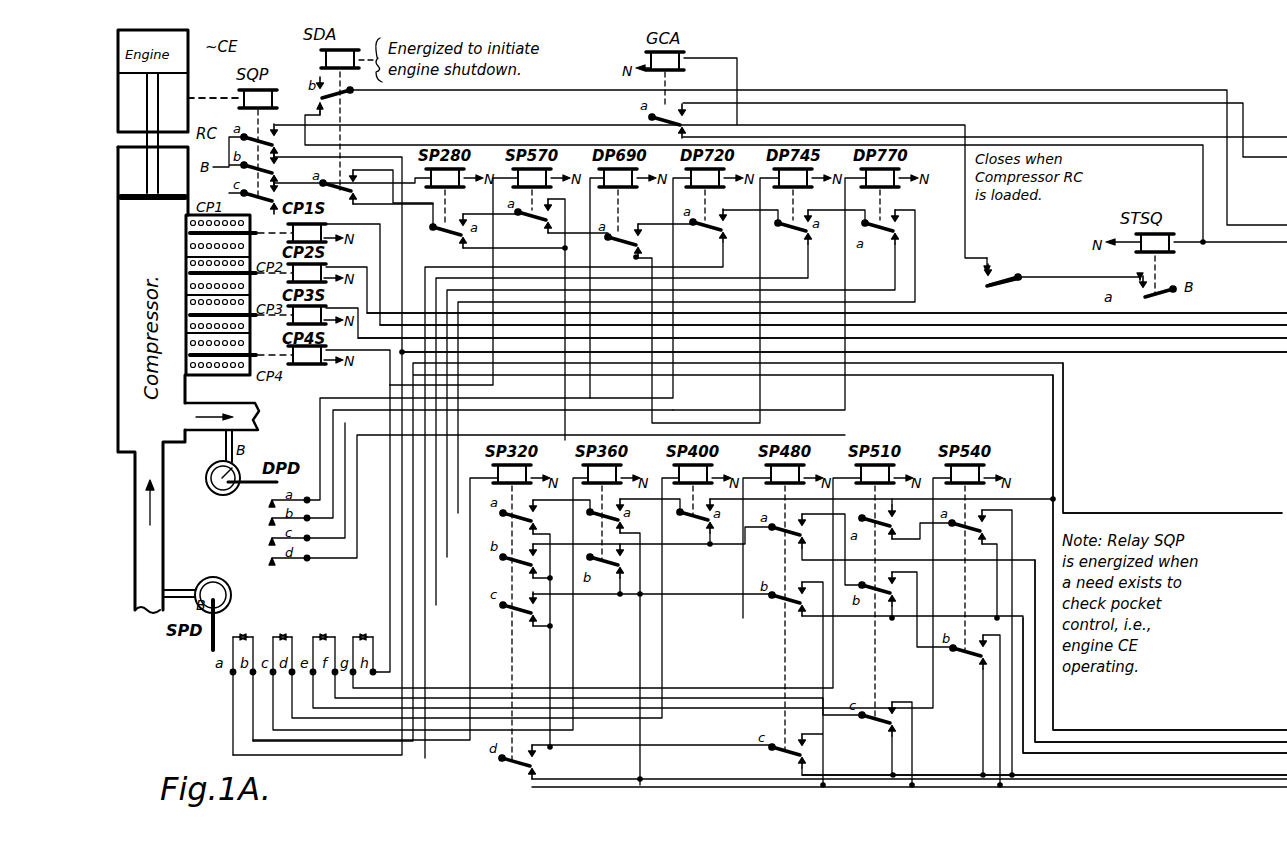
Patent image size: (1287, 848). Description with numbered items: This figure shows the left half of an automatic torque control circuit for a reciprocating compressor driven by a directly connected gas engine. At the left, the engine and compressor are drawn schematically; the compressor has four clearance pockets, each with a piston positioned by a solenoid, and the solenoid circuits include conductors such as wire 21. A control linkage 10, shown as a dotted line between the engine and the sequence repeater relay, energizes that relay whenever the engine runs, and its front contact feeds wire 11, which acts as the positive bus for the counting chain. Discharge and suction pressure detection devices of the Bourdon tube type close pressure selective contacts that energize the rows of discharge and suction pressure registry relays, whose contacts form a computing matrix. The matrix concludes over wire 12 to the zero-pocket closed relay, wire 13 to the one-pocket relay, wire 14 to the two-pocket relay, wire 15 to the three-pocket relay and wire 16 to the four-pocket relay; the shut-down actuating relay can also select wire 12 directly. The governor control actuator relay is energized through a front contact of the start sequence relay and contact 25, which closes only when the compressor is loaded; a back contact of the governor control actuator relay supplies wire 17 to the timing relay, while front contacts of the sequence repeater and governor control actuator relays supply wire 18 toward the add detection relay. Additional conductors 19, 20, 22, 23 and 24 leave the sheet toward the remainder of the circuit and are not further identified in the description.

The control linkage 10 is at (218, 98).
The wire 11 is at (1172, 438).
The wire 12 is at (1170, 557).
The wire 13 is at (1140, 738).
The wire 14 is at (1180, 755).
The wire 15 is at (1152, 778).
The wire 16 is at (1252, 788).
The wire 17 is at (985, 126).
The wire 18 is at (985, 130).
The conductor 19 is at (818, 157).
The conductor 20 is at (1230, 255).
The wire 21 is at (827, 303).
The conductor 22 is at (1206, 326).
The conductor 23 is at (1210, 340).
The conductor 24 is at (1234, 354).
The contact 25 is at (1012, 205).